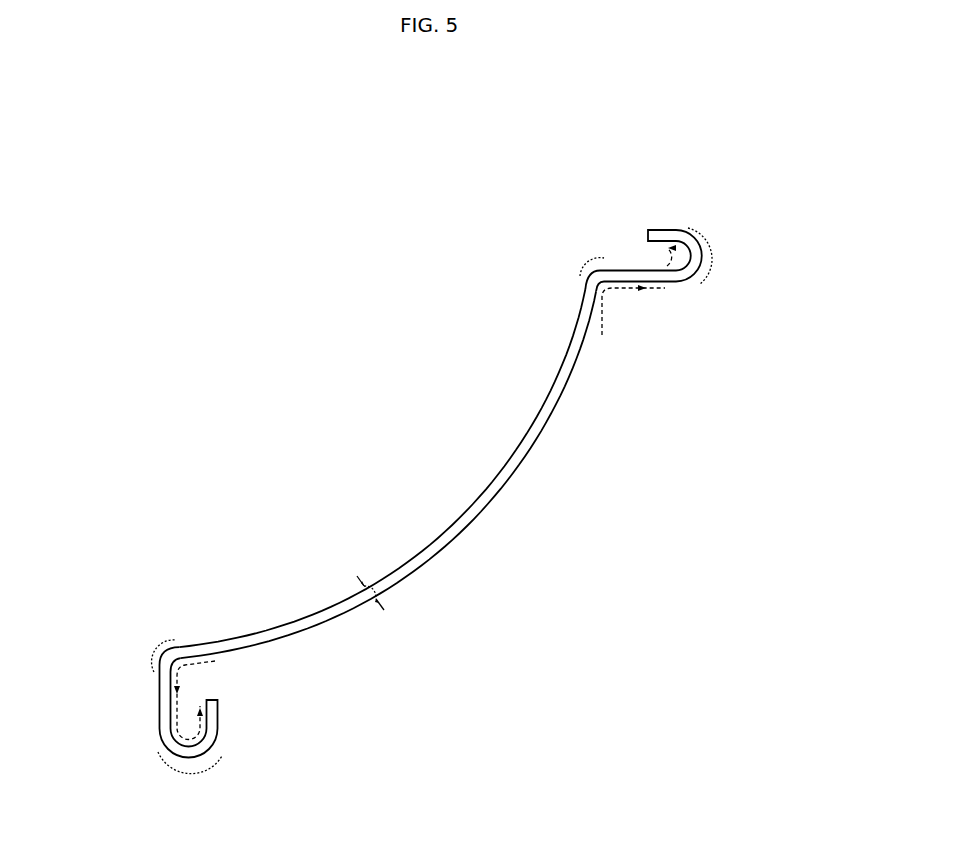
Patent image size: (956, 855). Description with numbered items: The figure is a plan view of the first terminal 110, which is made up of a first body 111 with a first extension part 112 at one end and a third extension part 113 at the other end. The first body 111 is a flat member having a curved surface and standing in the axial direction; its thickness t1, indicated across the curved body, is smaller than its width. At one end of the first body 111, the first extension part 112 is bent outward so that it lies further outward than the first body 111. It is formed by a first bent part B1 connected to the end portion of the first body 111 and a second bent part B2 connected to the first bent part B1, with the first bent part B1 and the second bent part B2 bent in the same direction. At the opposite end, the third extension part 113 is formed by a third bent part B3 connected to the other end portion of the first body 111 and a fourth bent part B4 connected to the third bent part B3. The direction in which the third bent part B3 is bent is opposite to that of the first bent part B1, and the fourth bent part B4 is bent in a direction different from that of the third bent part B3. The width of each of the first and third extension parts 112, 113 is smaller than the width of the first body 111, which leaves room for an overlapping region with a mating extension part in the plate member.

The first terminal 110 is at (132, 146).
The first body 111 is at (518, 479).
The first extension part 112 is at (208, 762).
The third extension part 113 is at (698, 205).
The first bent part B1 is at (150, 653).
The second bent part B2 is at (186, 761).
The third bent part B3 is at (583, 268).
The fourth bent part B4 is at (705, 262).
The thickness t1 is at (376, 590).